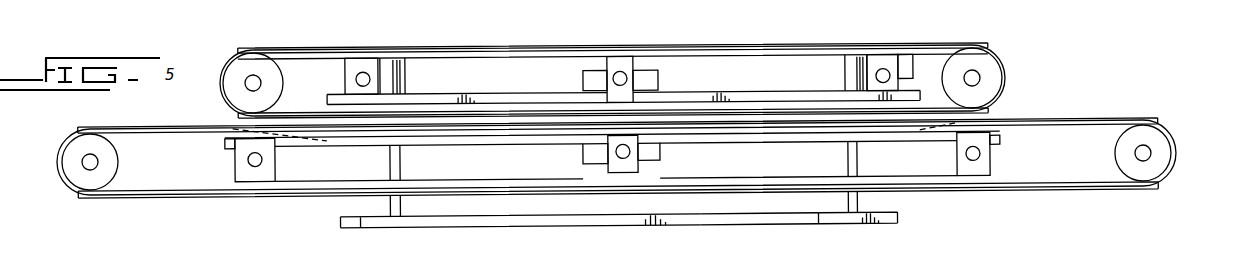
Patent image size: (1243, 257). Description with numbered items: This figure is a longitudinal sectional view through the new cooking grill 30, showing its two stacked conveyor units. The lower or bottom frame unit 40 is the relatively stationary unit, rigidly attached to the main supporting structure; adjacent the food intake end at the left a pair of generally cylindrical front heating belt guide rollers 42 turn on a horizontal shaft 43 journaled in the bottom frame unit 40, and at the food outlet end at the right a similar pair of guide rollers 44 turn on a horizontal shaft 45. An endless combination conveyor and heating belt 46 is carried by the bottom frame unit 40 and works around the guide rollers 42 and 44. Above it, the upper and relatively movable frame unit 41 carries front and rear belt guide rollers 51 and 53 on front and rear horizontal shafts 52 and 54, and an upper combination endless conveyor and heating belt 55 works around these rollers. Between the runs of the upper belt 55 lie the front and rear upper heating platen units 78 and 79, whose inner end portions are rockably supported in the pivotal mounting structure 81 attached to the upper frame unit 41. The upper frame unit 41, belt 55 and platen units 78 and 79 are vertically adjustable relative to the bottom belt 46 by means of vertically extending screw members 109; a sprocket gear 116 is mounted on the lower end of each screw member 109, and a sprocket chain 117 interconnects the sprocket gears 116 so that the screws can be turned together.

The cooking grill 30 is at (995, 47).
The lower or bottom frame unit 40 is at (267, 200).
The upper and relatively movable frame unit 41 is at (345, 49).
The front heating belt guide rollers 42 is at (63, 165).
The horizontal shaft 43 is at (87, 168).
The guide rollers 44 is at (1150, 142).
The horizontal shaft 45 is at (1148, 156).
The endless combination conveyor and heating belt 46 is at (70, 140).
The front belt guide roller 51 is at (237, 70).
The front horizontal shaft 52 is at (255, 82).
The rear belt guide roller 53 is at (988, 91).
The rear horizontal shaft 54 is at (976, 78).
The upper combination endless conveyor and heating belt 55 is at (227, 97).
The front upper heating platen unit 78 is at (523, 105).
The rear upper heating platen unit 79 is at (775, 94).
The pivotal mounting structure 81 is at (656, 83).
The vertically extending screw members 109 is at (398, 172).
The sprocket gear 116 is at (410, 222).
The sprocket chain 117 is at (755, 220).